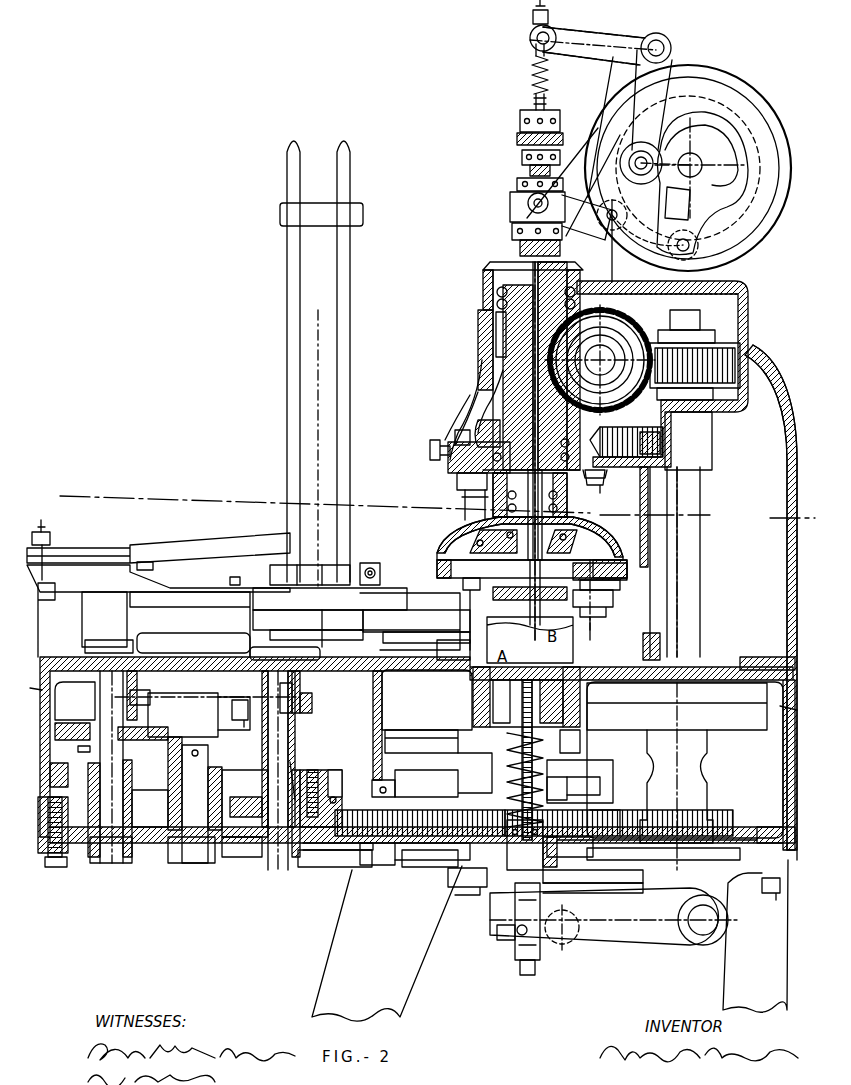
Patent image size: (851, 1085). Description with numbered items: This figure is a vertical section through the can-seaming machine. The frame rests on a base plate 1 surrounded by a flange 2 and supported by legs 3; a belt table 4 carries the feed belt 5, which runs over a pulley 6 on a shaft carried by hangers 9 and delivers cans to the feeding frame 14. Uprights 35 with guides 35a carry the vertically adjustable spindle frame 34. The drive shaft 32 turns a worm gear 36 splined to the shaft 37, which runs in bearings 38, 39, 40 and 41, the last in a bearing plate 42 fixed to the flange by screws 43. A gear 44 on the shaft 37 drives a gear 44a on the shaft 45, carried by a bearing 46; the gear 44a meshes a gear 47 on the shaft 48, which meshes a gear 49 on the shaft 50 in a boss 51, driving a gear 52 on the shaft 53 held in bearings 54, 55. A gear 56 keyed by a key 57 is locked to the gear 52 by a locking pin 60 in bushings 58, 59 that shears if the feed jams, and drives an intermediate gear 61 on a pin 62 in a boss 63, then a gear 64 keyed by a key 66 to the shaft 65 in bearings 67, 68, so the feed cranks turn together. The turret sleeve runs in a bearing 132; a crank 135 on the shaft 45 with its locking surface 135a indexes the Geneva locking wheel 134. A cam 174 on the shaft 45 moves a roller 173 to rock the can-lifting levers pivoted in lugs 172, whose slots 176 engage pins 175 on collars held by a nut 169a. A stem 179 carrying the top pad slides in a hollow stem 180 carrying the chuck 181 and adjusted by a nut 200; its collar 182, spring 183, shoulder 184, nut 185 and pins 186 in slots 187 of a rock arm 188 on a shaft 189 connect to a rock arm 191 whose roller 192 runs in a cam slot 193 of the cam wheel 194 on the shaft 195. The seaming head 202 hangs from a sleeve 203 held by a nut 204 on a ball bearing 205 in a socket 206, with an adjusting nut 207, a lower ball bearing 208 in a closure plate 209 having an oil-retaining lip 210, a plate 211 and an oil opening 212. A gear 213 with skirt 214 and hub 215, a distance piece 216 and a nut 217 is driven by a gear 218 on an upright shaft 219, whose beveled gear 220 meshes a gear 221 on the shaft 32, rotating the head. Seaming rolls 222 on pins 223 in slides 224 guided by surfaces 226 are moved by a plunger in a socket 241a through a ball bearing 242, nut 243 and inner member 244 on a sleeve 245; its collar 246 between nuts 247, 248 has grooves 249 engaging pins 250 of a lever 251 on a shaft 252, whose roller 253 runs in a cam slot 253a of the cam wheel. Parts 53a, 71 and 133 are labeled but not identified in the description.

The base plate 1 is at (723, 673).
The flange 2 is at (783, 762).
The legs 3 is at (728, 963).
The belt table 4 is at (411, 700).
The feed belt 5 is at (199, 715).
The pulley 6 is at (232, 725).
The hangers 9 is at (220, 678).
The feeding frame 14 is at (177, 627).
The shaft 32 is at (610, 353).
The spindle frame 34 is at (747, 295).
The uprights 35 is at (783, 400).
The guides 35a is at (657, 522).
The worm gear 36 is at (737, 347).
The shaft 37 is at (700, 322).
The bearing 38 is at (700, 300).
The bearing 39 is at (705, 413).
The bearing 40 is at (697, 670).
The bearing 41 is at (693, 843).
The bearing plate 42 is at (337, 847).
The screws 43 is at (55, 870).
The gear 44 is at (713, 813).
The gear 44a is at (600, 812).
The shaft 45 is at (572, 733).
The bearing 46 is at (590, 870).
The gear 47 is at (445, 848).
The shaft 48 is at (470, 877).
The gear 49 is at (430, 830).
The shaft 50 is at (390, 790).
The boss 51 is at (377, 860).
The gear 52 is at (325, 832).
The shaft 53 is at (270, 863).
The collar 53a is at (312, 707).
The bearing 54 is at (253, 857).
The bearing 55 is at (307, 683).
The gear 56 is at (300, 762).
The key 57 is at (290, 762).
The bushing 58 is at (335, 775).
The bushing 59 is at (336, 797).
The locking pin 60 is at (313, 765).
The gear 61 is at (173, 852).
The pin 62 is at (200, 755).
The boss 63 is at (173, 863).
The gear 64 is at (177, 783).
The shaft 65 is at (107, 858).
The key 66 is at (130, 763).
The bearing 67 is at (125, 862).
The bearing 68 is at (95, 677).
The screw 71 is at (78, 749).
The bearing 132 is at (450, 690).
The gear 133 is at (412, 740).
The locking wheel 134 is at (427, 787).
The crank 135 is at (552, 768).
The locking surface 135a is at (552, 790).
The nut 169a is at (532, 957).
The ears or lugs 172 is at (727, 890).
The roller 173 is at (570, 943).
The cam 174 is at (615, 888).
The pins 175 is at (515, 953).
The slots 176 is at (507, 940).
The stem 179 is at (630, 553).
The hollow stem 180 is at (437, 568).
The chuck 181 is at (493, 591).
The collar 182 is at (535, 40).
The spring 183 is at (534, 74).
The shoulder 184 is at (534, 100).
The nut 185 is at (548, 25).
The pins 186 is at (537, 36).
The slots 187 is at (578, 33).
The rock arm 188 is at (621, 37).
The shaft 189 is at (667, 40).
The rock arm 191 is at (662, 80).
The roller 192 is at (642, 160).
The cam slot 193 is at (778, 163).
The cam wheel 194 is at (753, 220).
The shaft 195 is at (700, 160).
The nut 200 is at (549, 124).
The head 202 is at (447, 535).
The sleeve 203 is at (485, 333).
The nut 204 is at (537, 259).
The ball bearing 205 is at (490, 287).
The socket 206 is at (497, 305).
The adjusting nut 207 is at (496, 322).
The ball bearing 208 is at (487, 427).
The closure plate 209 is at (600, 485).
The lip 210 is at (493, 403).
The plate 211 is at (448, 468).
The oil opening 212 is at (450, 443).
The gear 213 is at (473, 433).
The skirt 214 is at (472, 393).
The hub 215 is at (500, 357).
The distance piece 216 is at (470, 480).
The nut 217 is at (625, 280).
The gear 218 is at (665, 447).
The upright shaft 219 is at (592, 485).
The beveled gear 220 is at (667, 407).
The gear 221 is at (703, 267).
The seaming rolls 222 is at (613, 603).
The pins 223 is at (592, 612).
The slides 224 is at (627, 577).
The guide surfaces 226 is at (627, 587).
The socket 241a is at (450, 546).
The ball bearing 242 is at (502, 507).
The nut 243 is at (491, 490).
The inner member 244 is at (532, 558).
The sleeve 245 is at (520, 253).
The collar 246 is at (518, 182).
The nut 247 is at (518, 230).
The nut 248 is at (520, 167).
The grooves 249 is at (519, 200).
The pins 250 is at (541, 200).
The lever 251 is at (591, 213).
The shaft 252 is at (590, 228).
The roller 253 is at (693, 237).
The cam slot 253a is at (747, 233).